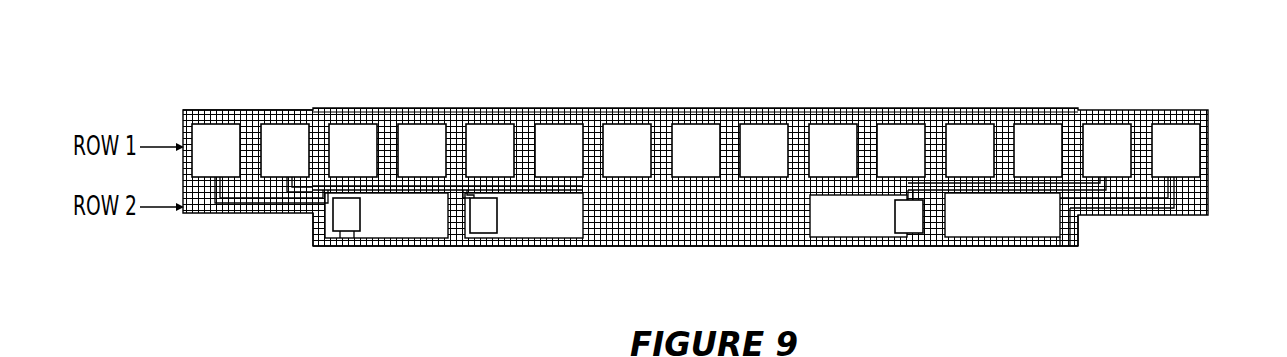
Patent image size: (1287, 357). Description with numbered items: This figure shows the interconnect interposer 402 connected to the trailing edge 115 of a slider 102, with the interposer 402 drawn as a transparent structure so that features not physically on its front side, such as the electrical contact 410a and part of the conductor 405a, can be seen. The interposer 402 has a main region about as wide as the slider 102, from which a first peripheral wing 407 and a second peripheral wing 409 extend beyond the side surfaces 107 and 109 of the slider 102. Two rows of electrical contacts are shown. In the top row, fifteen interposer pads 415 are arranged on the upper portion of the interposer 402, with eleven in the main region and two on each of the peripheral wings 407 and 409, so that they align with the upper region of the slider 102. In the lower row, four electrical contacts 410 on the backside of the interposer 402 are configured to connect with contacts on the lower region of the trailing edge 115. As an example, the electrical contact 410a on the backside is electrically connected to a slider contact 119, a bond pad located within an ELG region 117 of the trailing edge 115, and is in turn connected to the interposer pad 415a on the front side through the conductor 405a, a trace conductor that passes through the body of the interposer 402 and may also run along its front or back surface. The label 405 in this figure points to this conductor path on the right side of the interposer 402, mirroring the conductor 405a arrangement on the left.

The slider 102 is at (483, 108).
The interconnect interposer 402 is at (286, 110).
The interposer pad 415a is at (221, 131).
The interposer pads 415 is at (900, 128).
The first peripheral wing 407 is at (200, 213).
The conductor 405a is at (258, 213).
The side surface 107 is at (313, 226).
The slider contact 119 is at (350, 234).
The electrical contact 410a is at (360, 216).
The ELG region 117 is at (443, 222).
The trailing edge 115 is at (603, 247).
The electrical contacts 410 is at (902, 232).
The interconnect trace 405 is at (977, 195).
The side surface 109 is at (1080, 236).
The second peripheral wing 409 is at (1150, 216).